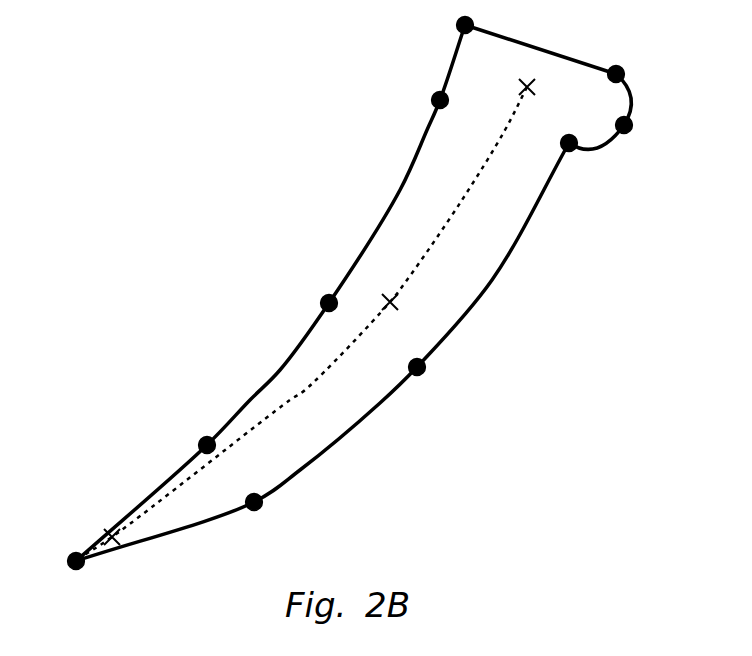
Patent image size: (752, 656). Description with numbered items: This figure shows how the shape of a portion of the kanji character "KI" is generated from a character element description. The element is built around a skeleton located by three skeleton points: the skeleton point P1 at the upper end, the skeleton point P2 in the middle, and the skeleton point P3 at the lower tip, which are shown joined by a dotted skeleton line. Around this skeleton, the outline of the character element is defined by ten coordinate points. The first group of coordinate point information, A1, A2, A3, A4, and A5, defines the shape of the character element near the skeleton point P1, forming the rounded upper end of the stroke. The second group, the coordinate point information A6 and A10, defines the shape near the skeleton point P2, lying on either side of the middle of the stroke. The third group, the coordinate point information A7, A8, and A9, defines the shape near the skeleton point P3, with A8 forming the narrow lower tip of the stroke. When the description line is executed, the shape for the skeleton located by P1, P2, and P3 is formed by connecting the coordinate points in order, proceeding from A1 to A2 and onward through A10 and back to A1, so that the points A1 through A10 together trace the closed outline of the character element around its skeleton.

The coordinate point information A1 is at (583, 162).
The coordinate point information A2 is at (641, 137).
The coordinate point information A3 is at (632, 62).
The coordinate point information A4 is at (459, 17).
The coordinate point information A5 is at (422, 99).
The coordinate point information A6 is at (318, 290).
The coordinate point information A7 is at (191, 435).
The coordinate point information A8 is at (57, 567).
The coordinate point information A9 is at (272, 515).
The coordinate point information A10 is at (440, 380).
The skeleton point P1 is at (521, 86).
The skeleton point P2 is at (391, 296).
The skeleton point P3 is at (112, 530).